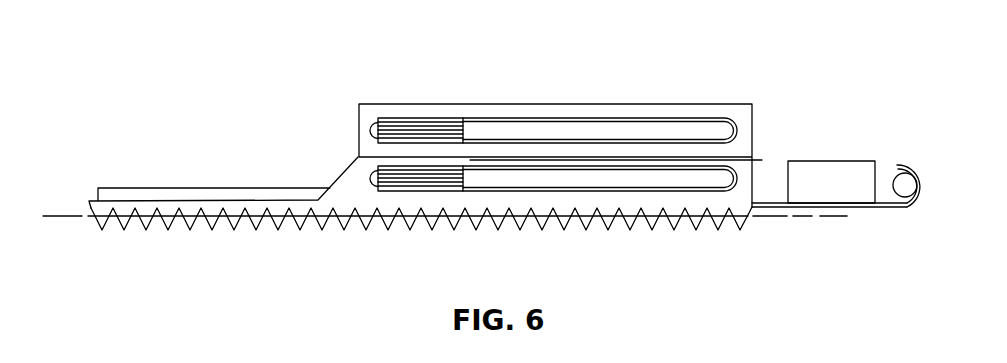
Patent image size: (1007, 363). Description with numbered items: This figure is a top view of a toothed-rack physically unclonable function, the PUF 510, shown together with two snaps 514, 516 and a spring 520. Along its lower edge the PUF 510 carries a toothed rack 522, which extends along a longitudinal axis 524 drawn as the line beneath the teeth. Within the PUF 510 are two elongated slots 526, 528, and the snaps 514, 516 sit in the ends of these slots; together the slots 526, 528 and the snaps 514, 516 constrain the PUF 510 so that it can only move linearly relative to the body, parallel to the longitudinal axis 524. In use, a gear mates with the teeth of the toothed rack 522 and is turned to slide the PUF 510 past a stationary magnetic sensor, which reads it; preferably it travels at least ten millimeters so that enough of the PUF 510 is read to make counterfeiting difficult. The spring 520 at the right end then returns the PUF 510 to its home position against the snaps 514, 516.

The PUF 510 is at (337, 180).
The snap 514 is at (385, 116).
The snap 516 is at (458, 165).
The spring 520 is at (852, 160).
The toothed rack 522 is at (698, 230).
The longitudinal axis 524 is at (62, 216).
The slot 526 is at (675, 117).
The slot 528 is at (725, 168).